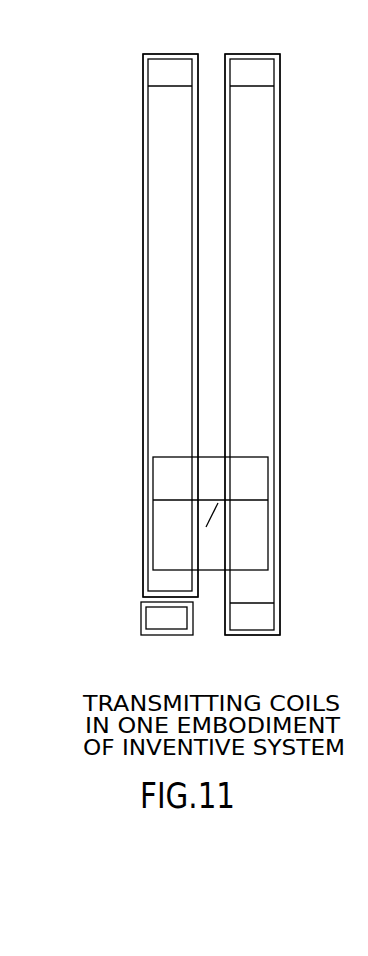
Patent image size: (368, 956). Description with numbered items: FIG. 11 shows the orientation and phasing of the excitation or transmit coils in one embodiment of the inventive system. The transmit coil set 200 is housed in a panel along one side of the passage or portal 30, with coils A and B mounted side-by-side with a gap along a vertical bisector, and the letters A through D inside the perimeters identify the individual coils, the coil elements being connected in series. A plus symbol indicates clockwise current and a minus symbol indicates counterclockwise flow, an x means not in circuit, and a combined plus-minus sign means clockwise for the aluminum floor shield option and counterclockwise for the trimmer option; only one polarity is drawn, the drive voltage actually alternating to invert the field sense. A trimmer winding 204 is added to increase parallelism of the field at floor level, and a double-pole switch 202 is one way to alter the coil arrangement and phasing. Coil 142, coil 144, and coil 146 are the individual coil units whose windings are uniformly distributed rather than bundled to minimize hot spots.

The first transmitting coil A 142 is at (146, 178).
The second transmitting coil B 144 is at (280, 198).
The third transmitting coil C 146 is at (248, 570).
The transmit coil set 200 is at (185, 668).
The double-pole switch 202 is at (270, 668).
The trimmer winding 204 is at (141, 620).
The passage or portal 30 is at (281, 404).